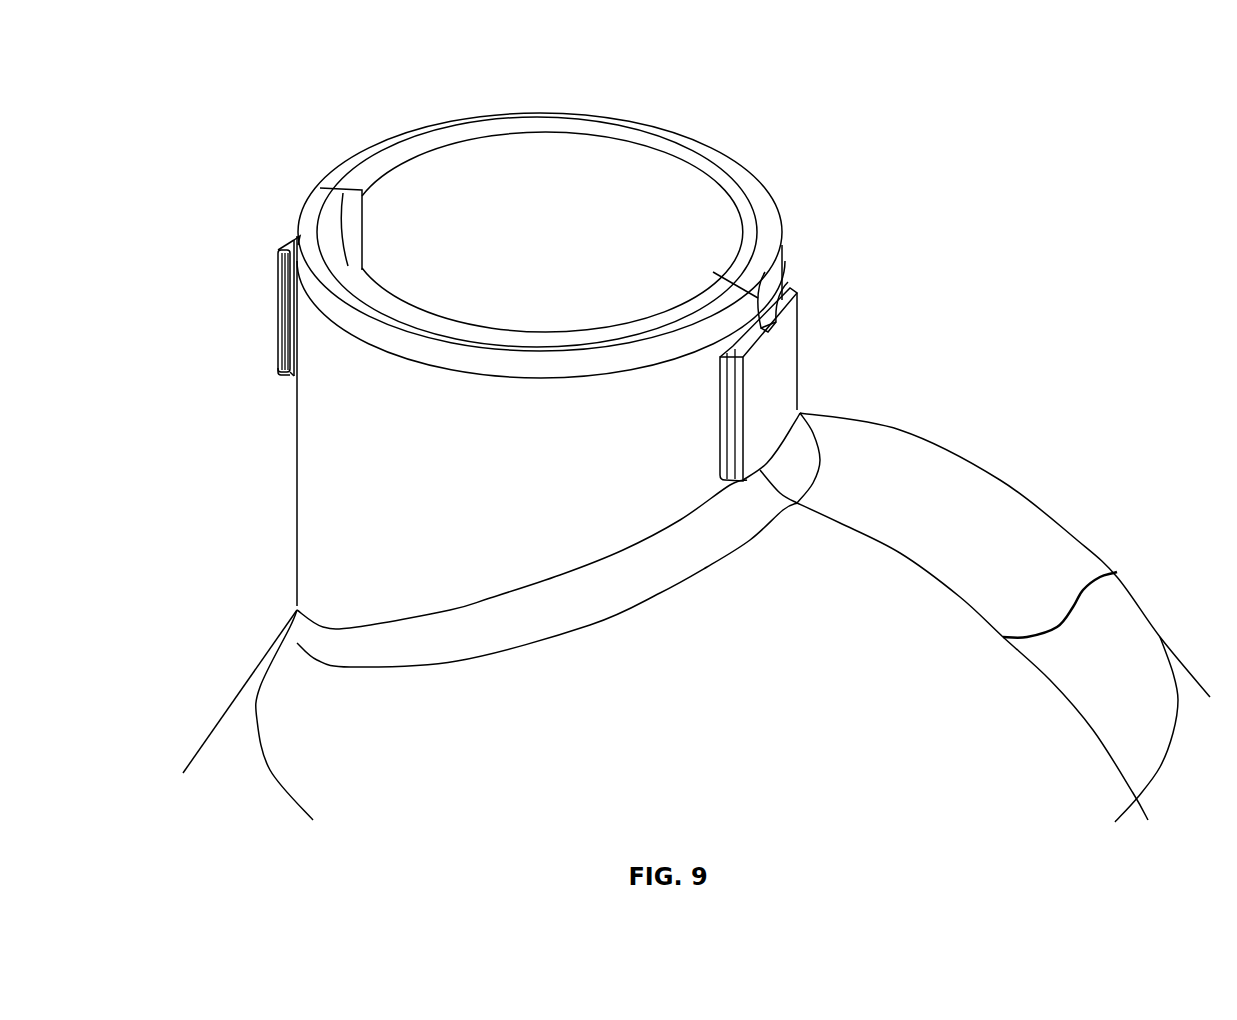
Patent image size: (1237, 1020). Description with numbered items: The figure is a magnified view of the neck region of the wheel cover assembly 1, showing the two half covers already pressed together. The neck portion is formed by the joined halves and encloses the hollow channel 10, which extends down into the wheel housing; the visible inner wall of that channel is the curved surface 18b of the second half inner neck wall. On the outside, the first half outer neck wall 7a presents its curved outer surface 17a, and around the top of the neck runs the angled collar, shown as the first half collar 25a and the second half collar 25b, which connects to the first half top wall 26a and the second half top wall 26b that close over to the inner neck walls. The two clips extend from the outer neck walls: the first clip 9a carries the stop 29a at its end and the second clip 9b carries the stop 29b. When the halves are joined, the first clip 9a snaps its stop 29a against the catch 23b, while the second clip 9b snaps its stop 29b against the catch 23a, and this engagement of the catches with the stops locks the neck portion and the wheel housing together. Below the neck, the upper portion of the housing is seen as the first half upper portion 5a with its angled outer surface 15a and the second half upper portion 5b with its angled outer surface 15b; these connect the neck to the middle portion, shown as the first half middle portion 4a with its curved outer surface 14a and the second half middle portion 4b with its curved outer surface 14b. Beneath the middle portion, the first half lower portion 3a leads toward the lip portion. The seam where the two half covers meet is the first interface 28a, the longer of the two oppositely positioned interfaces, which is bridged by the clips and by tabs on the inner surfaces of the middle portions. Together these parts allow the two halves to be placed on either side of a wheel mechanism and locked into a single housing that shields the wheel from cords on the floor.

The wheel cover assembly 1 is at (1027, 273).
The hollow channel 10 is at (480, 208).
The curved surface 18b is at (573, 226).
The curved outer surface 17a is at (499, 461).
The first half top wall 26a is at (333, 237).
The second half top wall 26b is at (738, 210).
The first half collar 25a is at (377, 333).
The second half collar 25b is at (763, 243).
The catch 23a is at (297, 237).
The catch 23b is at (770, 305).
The first clip 9a is at (787, 378).
The second clip 9b is at (283, 246).
The stop 29a is at (777, 300).
The stop 29b is at (293, 373).
The first half outer neck wall 7a is at (333, 532).
The first half upper portion 5a is at (343, 640).
The second half upper portion 5b is at (807, 440).
The angled outer surface 15a is at (671, 554).
The angled outer surface 15b is at (769, 484).
The first half middle portion 4a is at (330, 731).
The second half middle portion 4b is at (902, 458).
The curved outer surface 14a is at (716, 674).
The curved outer surface 14b is at (951, 538).
The first interface 28a is at (1117, 572).
The first half lower portion 3a is at (215, 765).